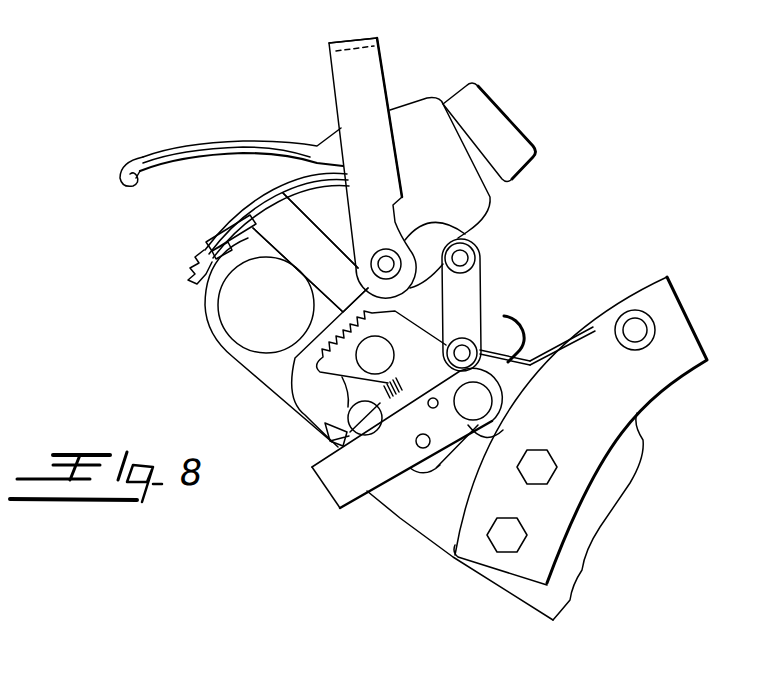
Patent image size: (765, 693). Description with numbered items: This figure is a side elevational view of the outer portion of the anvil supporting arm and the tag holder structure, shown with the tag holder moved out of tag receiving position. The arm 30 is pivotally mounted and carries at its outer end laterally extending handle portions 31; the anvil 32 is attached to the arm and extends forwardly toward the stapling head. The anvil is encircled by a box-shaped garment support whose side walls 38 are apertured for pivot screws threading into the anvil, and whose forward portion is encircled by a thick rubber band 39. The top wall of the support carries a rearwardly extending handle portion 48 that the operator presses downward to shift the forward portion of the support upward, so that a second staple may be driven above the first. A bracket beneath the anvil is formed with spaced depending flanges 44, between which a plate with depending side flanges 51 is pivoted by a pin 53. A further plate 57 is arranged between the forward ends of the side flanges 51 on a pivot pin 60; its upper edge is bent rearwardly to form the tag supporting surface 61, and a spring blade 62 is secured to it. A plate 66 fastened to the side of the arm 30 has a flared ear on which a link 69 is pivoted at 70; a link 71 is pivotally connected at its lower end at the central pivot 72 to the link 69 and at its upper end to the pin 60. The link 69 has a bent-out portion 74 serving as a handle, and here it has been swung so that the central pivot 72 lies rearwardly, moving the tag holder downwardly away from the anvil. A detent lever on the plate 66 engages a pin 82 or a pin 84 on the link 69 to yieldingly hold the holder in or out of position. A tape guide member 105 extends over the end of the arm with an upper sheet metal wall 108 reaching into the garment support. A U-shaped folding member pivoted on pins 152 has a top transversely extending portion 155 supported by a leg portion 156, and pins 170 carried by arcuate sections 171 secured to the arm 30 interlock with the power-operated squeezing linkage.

The arm 30 is at (238, 359).
The handle portions 31 is at (266, 305).
The anvil 32 is at (310, 252).
The side walls 38 is at (440, 168).
The rubber band 39 is at (489, 132).
The depending flanges 44 is at (440, 231).
The handle portion 48 is at (170, 147).
The side flanges 51 is at (461, 305).
The pin 53 is at (463, 257).
The plate 57 is at (488, 350).
The pivot pin 60 is at (447, 344).
The tag supporting surface 61 is at (520, 340).
The spring blade 62 is at (561, 339).
The plate 66 is at (438, 466).
The link 69 is at (416, 464).
The pivot 70 is at (485, 401).
The link 71 is at (407, 417).
The central pivot 72 is at (355, 412).
The bent-out portion 74 is at (332, 486).
The pin 82 is at (417, 446).
The pin 84 is at (432, 408).
The tape guide member 105 is at (192, 264).
The upper sheet metal wall 108 is at (265, 191).
The pins 152 is at (387, 254).
The top transversely extending portion 155 is at (357, 40).
The leg portion 156 is at (372, 168).
The pins 170 is at (633, 310).
The arcuate sections 171 is at (580, 431).